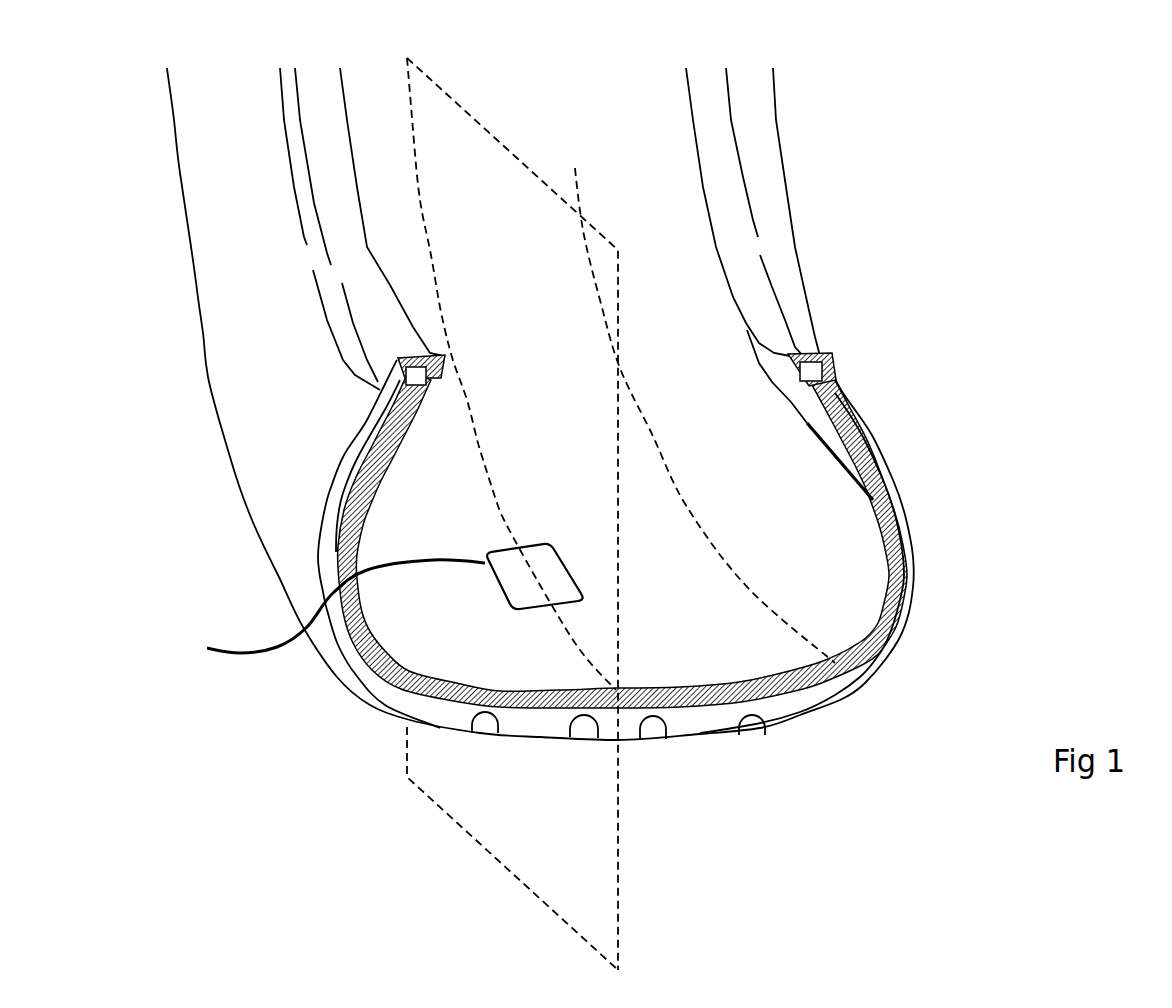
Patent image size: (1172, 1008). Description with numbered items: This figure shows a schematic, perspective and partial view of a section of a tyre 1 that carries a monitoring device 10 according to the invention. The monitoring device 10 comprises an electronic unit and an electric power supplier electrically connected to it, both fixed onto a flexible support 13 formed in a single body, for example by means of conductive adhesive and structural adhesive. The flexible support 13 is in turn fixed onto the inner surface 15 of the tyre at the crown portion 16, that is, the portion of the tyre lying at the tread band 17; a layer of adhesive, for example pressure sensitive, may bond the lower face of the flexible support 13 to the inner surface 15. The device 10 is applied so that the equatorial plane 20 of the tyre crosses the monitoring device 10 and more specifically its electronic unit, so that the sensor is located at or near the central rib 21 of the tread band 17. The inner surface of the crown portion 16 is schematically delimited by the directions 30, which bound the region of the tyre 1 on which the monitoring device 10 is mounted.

The tyre 1 is at (967, 158).
The monitoring device 10 is at (593, 572).
The flexible support 13 is at (322, 614).
The inner surface 15 is at (555, 398).
The crown portion 16 is at (600, 749).
The tread band 17 is at (520, 727).
The equatorial plane 20 is at (508, 153).
The central rib 21 is at (628, 730).
The directions 30 is at (575, 168).